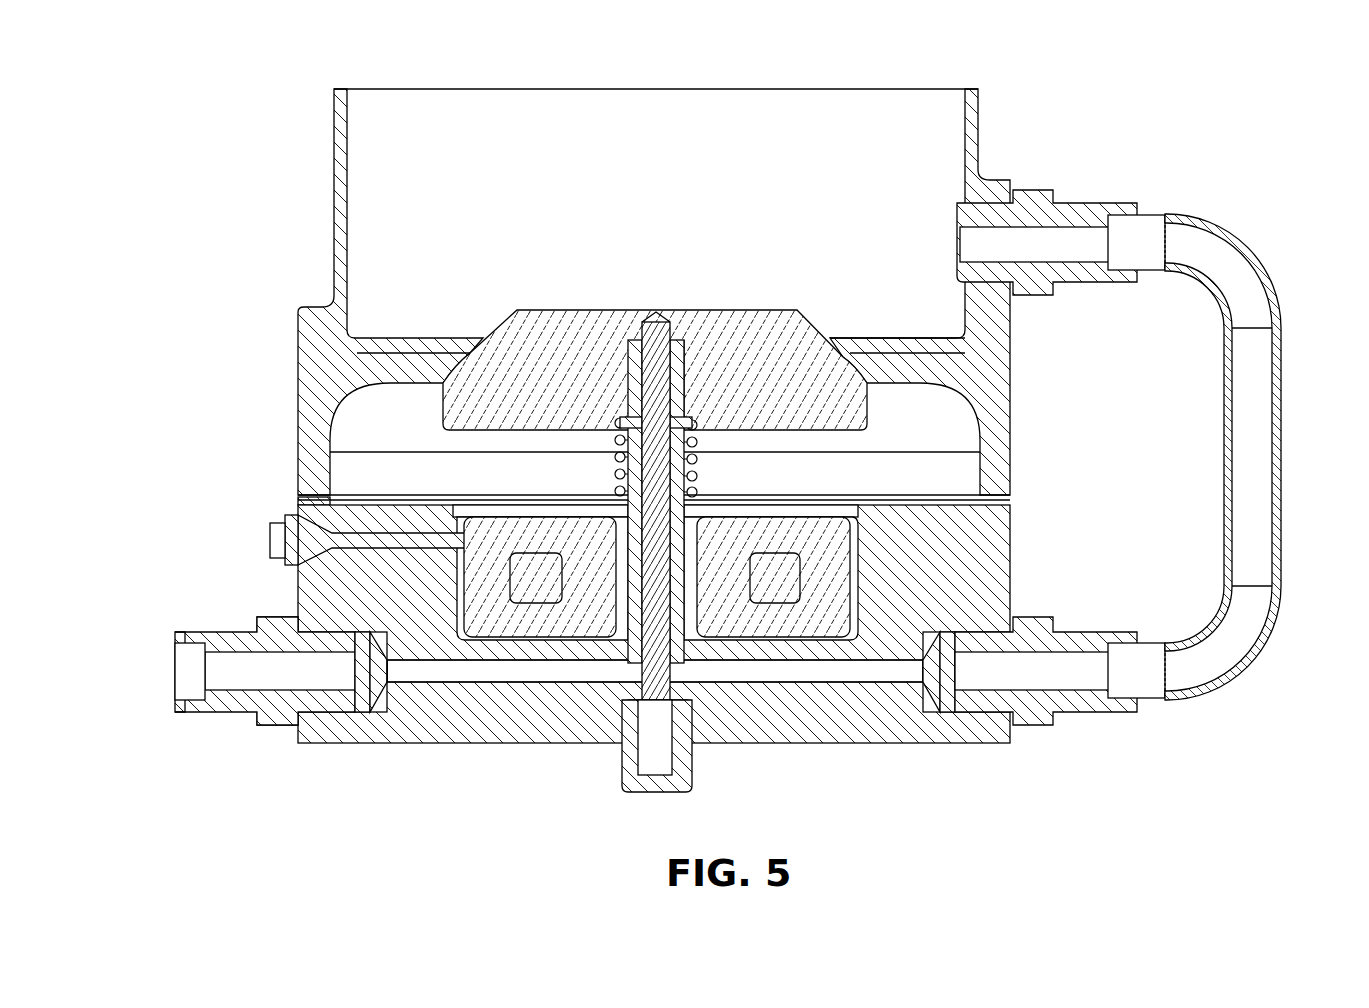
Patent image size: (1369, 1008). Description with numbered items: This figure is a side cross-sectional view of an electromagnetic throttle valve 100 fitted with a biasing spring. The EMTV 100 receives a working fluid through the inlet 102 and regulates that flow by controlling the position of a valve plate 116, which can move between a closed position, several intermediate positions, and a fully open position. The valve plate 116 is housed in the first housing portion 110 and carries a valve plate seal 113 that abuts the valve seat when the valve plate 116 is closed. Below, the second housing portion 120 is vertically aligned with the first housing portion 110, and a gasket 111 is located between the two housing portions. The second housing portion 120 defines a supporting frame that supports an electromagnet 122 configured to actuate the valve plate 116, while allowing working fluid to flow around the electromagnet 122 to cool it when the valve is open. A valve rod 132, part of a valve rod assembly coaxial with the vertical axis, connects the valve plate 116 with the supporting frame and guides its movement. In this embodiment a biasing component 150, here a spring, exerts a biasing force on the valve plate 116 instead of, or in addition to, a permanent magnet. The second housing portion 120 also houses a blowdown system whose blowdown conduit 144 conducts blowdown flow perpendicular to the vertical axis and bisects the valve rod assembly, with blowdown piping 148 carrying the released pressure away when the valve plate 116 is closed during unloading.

The electromagnetic throttle valve 100 is at (772, 421).
The inlet 102 is at (701, 269).
The first housing portion 110 is at (1003, 412).
The gasket 111 is at (1010, 497).
The valve plate seal 113 is at (853, 356).
The valve plate 116 is at (716, 323).
The second housing portion 120 is at (670, 500).
The electromagnet 122 is at (836, 551).
The valve rod 132 is at (638, 636).
The blowdown conduit 144 is at (467, 672).
The blowdown piping 148 is at (1252, 430).
The biasing component 150 is at (612, 477).